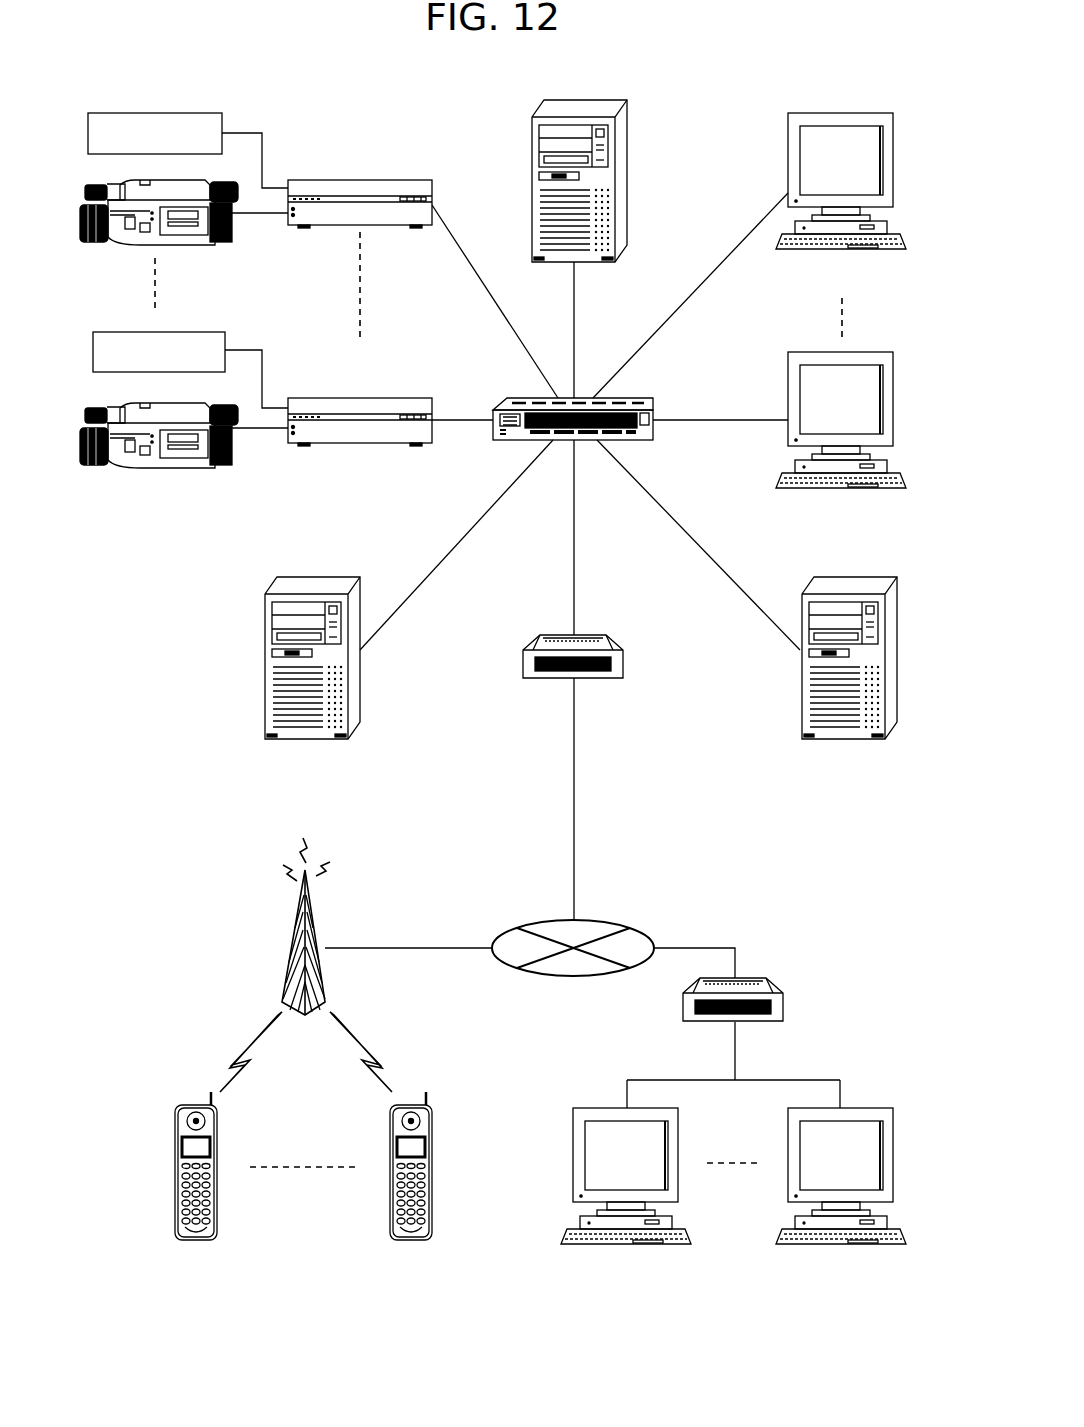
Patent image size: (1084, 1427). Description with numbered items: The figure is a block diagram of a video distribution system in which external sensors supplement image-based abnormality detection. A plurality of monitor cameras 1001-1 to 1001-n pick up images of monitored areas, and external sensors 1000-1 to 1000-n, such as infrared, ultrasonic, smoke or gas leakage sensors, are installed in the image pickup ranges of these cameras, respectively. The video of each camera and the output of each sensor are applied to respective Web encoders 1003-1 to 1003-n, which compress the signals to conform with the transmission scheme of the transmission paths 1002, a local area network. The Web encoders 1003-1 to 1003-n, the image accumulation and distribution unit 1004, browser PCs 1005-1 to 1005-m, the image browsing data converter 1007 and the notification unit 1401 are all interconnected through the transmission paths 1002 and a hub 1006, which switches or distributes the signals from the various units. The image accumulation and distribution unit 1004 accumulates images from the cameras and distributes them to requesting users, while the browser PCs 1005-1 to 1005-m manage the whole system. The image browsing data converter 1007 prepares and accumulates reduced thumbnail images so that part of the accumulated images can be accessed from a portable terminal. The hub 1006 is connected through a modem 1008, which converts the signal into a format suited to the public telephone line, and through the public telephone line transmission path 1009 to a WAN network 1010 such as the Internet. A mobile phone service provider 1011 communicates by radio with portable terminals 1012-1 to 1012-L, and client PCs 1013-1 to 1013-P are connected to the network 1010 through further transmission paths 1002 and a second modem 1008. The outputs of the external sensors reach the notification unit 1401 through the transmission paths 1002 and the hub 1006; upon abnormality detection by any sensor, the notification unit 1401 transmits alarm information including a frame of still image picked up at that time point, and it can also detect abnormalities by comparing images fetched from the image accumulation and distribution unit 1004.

The external sensor 1000-1 is at (188, 113).
The external sensor 1000-n is at (188, 330).
The monitor camera 1001-1 is at (128, 245).
The monitor camera 1001-n is at (128, 466).
The transmission path 1002 is at (262, 214).
The Web encoder 1003-1 is at (393, 226).
The Web encoder 1003-n is at (360, 444).
The image accumulation and distribution unit 1004 is at (627, 133).
The browser PC 1005-1 is at (843, 112).
The browser PC 1005-m is at (825, 352).
The hub 1006 is at (652, 400).
The image browsing data converter 1007 is at (265, 668).
The modem 1008 is at (623, 655).
The transmission path 1009 is at (575, 790).
The WAN network 1010 is at (570, 977).
The mobile phone service provider 1011 is at (286, 975).
The portable terminal 1012-1 is at (175, 1210).
The portable terminal 1012-L is at (390, 1210).
The client PC 1013-1 is at (573, 1140).
The client PC 1013-P is at (875, 1106).
The notification unit 1401 is at (802, 714).